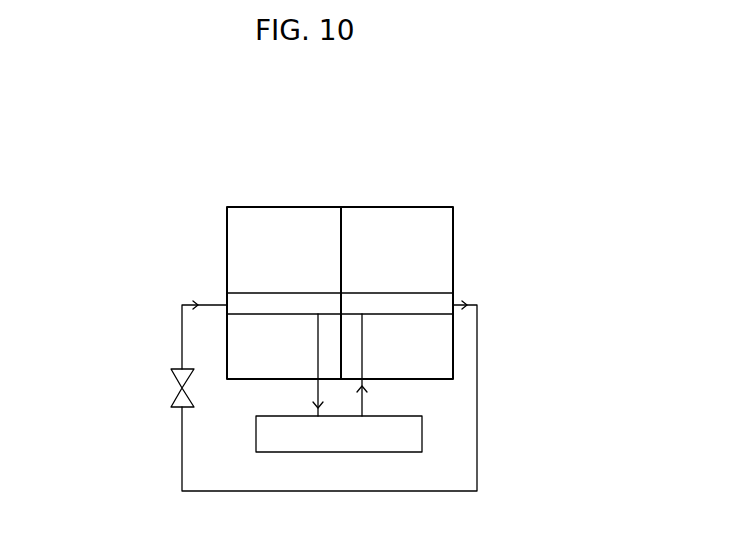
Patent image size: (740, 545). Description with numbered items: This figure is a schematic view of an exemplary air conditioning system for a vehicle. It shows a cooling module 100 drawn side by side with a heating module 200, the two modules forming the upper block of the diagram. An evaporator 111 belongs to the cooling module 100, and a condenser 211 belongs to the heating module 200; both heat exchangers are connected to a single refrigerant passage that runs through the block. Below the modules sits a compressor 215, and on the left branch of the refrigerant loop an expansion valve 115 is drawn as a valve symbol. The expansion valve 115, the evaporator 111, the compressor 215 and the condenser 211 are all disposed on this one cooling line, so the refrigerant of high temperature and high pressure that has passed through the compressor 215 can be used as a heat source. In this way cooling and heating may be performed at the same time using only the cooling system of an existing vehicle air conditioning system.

The cooling module 100 is at (285, 196).
The heating module 200 is at (389, 196).
The evaporator 111 is at (258, 305).
The condenser 211 is at (436, 302).
The expansion valve 115 is at (177, 379).
The compressor 215 is at (422, 432).